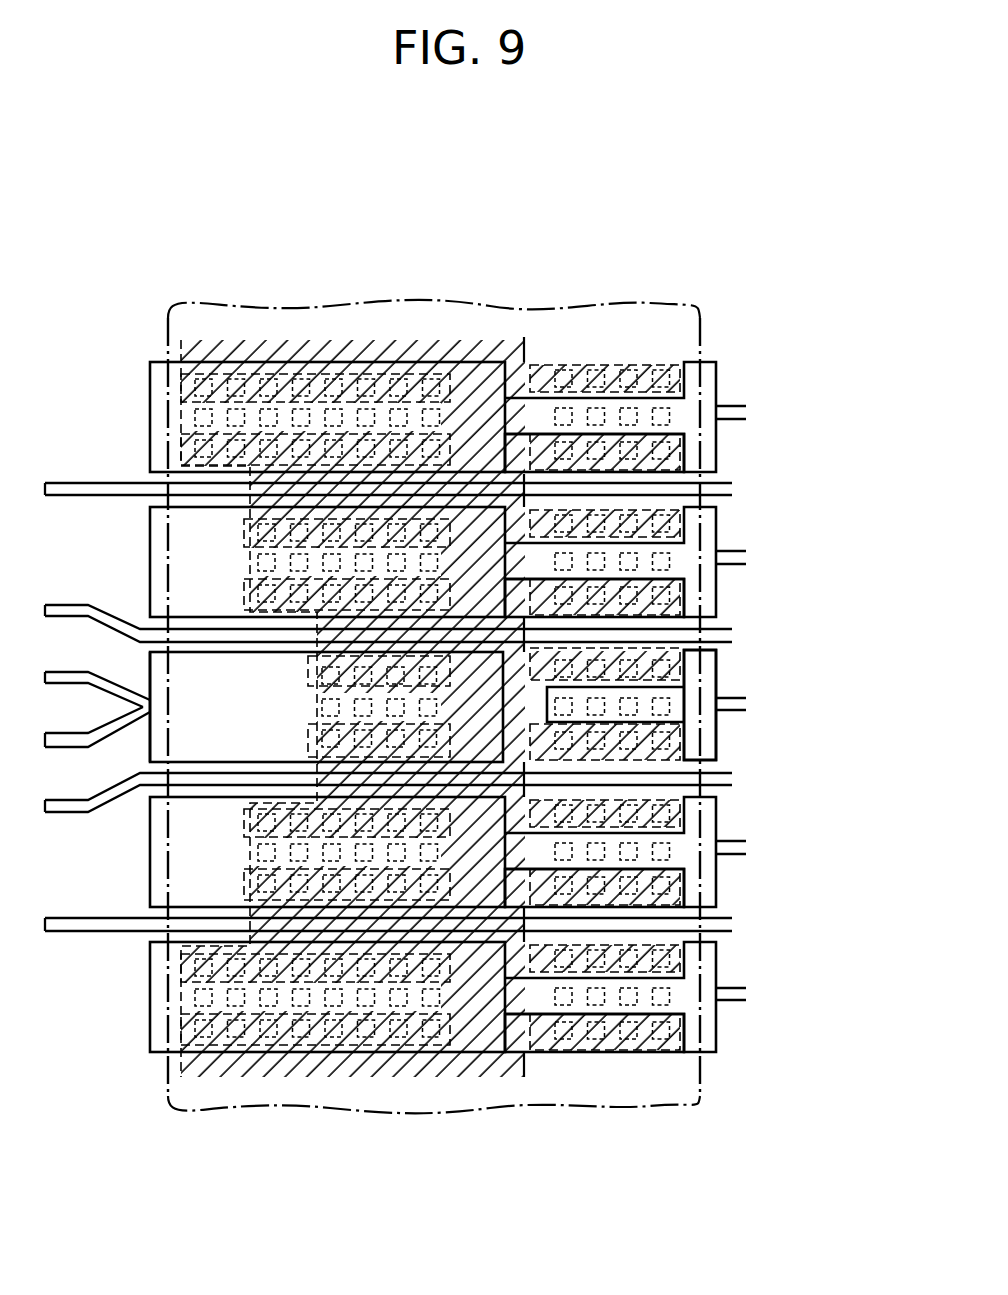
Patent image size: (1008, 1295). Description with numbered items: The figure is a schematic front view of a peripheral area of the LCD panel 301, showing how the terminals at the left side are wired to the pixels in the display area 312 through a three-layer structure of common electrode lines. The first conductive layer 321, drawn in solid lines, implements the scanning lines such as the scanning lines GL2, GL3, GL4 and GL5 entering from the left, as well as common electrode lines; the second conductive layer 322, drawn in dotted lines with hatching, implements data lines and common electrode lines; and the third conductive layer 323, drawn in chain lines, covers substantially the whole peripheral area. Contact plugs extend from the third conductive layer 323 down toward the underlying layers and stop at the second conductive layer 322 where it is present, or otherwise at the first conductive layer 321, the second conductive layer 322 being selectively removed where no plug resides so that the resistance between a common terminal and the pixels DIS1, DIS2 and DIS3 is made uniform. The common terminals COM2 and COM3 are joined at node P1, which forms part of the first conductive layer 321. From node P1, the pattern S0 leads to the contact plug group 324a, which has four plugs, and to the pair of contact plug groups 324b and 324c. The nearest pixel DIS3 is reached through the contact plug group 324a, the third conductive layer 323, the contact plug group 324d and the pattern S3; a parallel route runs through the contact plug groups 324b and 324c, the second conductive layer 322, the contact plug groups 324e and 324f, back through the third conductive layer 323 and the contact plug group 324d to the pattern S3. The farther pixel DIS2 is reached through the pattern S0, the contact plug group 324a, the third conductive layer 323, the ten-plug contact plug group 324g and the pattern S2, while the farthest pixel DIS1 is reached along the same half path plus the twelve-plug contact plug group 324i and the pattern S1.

The LCD panel 301 is at (543, 191).
The display area 312 is at (778, 298).
The first conductive layer 321 is at (717, 370).
The second conductive layer 322 is at (683, 474).
The third conductive layer 323 is at (635, 305).
The contact plug group 324a is at (320, 706).
The contact plug group 324b is at (320, 672).
The contact plug group 324c is at (320, 737).
The contact plug group 324d is at (683, 705).
The contact plug group 324e is at (680, 522).
The contact plug group 324f is at (683, 740).
The contact plug group 324g is at (258, 565).
The contact plug group 324i is at (190, 420).
The pattern of the first conductive layer S0 is at (150, 665).
The pattern of the first conductive layer S1 is at (150, 383).
The pattern of the first conductive layer S2 is at (150, 525).
The pattern of the first conductive layer S3 is at (717, 677).
The node P1 is at (147, 707).
The pixel DIS1 is at (764, 416).
The pixel DIS2 is at (764, 559).
The pixel DIS3 is at (764, 707).
The scanning line GL2 is at (387, 473).
The scanning line GL3 is at (387, 606).
The scanning line GL4 is at (387, 791).
The scanning line GL5 is at (387, 911).
The common terminal COM2 is at (84, 676).
The common terminal COM3 is at (84, 724).